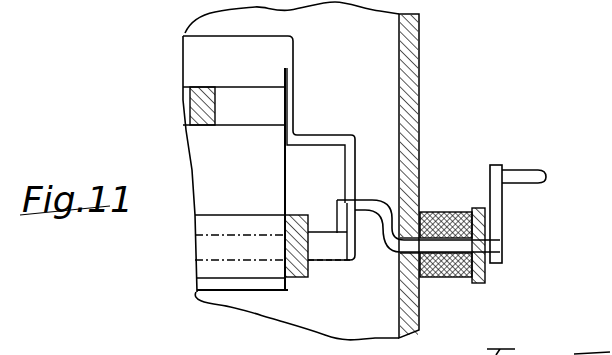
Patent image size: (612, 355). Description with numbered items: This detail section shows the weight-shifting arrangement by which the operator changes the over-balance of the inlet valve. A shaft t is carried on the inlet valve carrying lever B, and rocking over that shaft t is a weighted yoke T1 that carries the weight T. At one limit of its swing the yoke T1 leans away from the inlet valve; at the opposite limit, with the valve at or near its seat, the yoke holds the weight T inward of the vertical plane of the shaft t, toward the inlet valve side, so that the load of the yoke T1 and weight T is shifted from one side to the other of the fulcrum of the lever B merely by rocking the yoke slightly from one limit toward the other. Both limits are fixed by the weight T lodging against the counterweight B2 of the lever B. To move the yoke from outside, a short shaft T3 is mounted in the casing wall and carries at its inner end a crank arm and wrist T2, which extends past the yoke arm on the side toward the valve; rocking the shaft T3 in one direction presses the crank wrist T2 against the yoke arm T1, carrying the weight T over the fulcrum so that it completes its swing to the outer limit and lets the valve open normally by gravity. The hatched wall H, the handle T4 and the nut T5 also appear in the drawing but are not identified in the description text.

The weight T is at (254, 43).
The weighted yoke T1 is at (296, 127).
The crank arm and wrist T2 is at (338, 199).
The short shaft T3 is at (410, 242).
The handle T4 is at (504, 168).
The nut T5 is at (434, 216).
The inlet valve carrying lever B is at (215, 108).
The counterweight B2 is at (250, 197).
The frame wall H is at (419, 50).
The shaft t is at (327, 262).